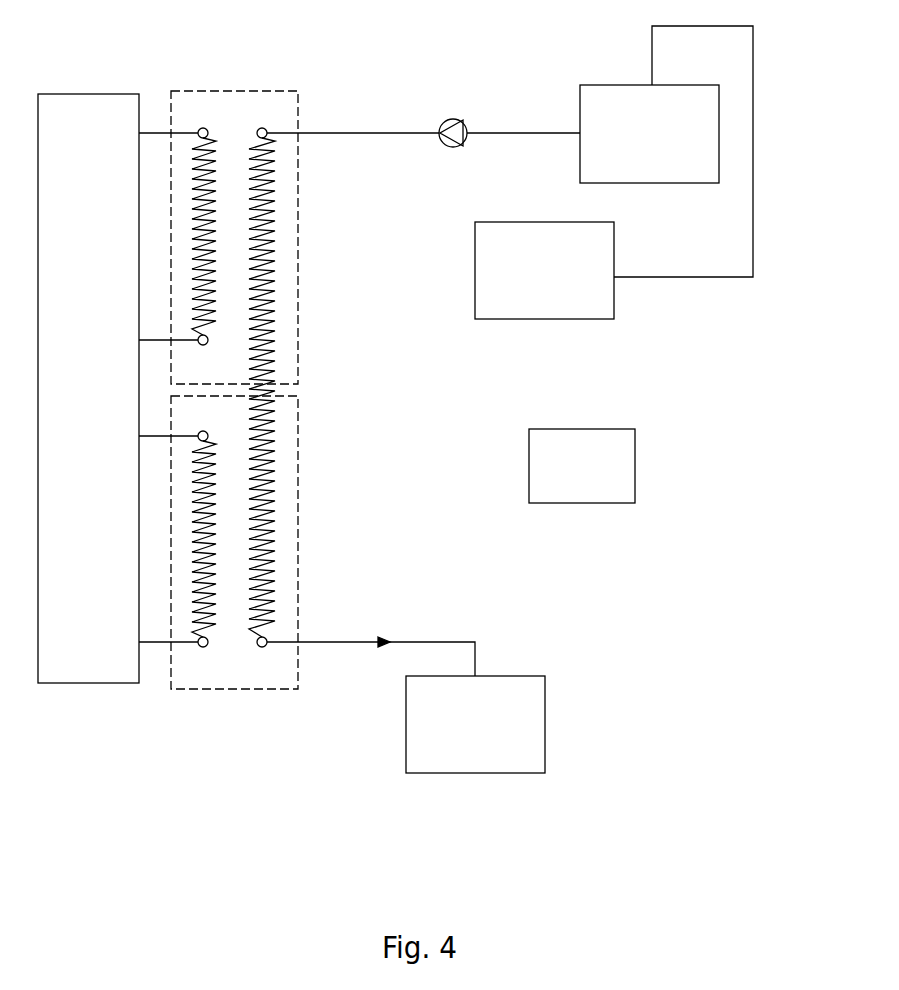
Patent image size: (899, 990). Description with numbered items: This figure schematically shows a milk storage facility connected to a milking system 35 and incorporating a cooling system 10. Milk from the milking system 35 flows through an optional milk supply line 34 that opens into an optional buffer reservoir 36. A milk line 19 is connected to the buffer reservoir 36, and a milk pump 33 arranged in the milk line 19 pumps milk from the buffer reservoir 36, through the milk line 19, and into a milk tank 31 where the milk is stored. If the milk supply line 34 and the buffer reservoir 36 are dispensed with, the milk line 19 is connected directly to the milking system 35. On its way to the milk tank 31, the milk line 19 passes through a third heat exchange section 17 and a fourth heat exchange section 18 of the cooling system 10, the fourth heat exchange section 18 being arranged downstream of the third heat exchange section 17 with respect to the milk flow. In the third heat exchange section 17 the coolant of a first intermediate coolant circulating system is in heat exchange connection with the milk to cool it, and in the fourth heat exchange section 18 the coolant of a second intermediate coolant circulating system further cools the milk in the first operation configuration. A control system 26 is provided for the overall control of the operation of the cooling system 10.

The cooling system 10 is at (86, 93).
The third heat exchange section 17 is at (230, 91).
The fourth heat exchange section 18 is at (236, 690).
The milk line 19 is at (362, 133).
The control system 26 is at (637, 463).
The milk tank 31 is at (547, 720).
The milk pump 33 is at (457, 118).
The milk supply line 34 is at (756, 153).
The milking system 35 is at (474, 262).
The buffer reservoir 36 is at (580, 110).